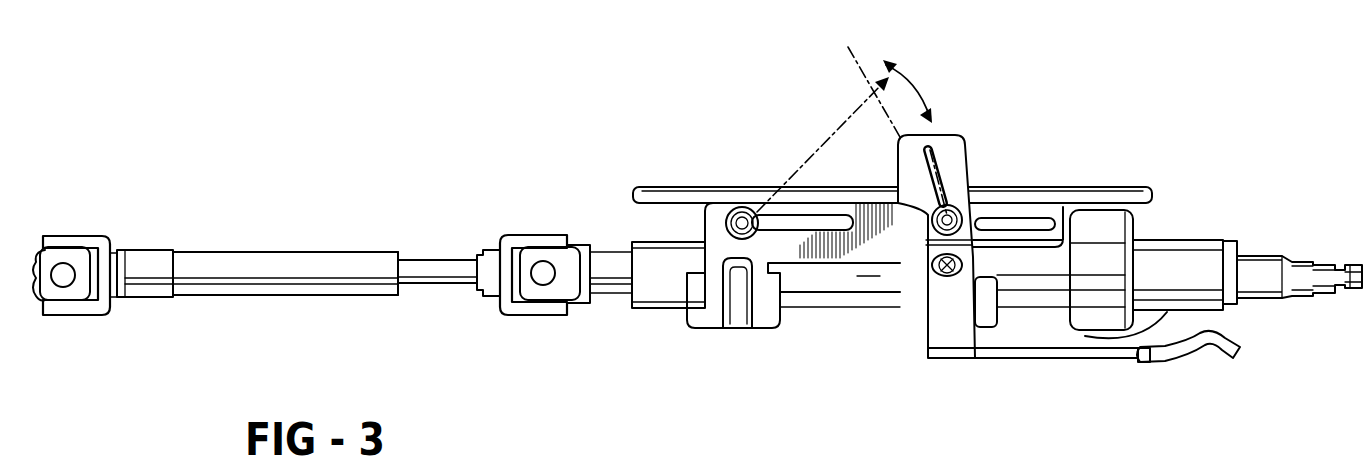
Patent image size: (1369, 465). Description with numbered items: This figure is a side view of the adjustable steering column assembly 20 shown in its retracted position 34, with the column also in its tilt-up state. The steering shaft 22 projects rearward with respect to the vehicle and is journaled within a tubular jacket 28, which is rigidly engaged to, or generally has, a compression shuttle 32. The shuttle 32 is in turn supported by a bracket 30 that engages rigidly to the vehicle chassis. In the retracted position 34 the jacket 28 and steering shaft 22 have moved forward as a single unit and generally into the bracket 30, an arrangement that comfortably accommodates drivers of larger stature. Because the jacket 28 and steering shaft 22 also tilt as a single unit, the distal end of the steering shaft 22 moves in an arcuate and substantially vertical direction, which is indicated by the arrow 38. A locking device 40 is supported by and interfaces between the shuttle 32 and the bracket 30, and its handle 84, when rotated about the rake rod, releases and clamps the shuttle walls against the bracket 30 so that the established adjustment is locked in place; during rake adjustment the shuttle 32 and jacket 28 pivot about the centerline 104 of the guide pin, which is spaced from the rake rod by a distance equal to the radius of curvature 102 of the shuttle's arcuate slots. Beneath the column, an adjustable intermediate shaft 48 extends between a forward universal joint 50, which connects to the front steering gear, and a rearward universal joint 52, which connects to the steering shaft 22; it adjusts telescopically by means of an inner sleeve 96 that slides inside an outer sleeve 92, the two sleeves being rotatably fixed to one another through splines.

The adjustable steering column assembly 20 is at (1131, 198).
The steering shaft 22 is at (1257, 248).
The jacket 28 is at (1188, 233).
The bracket 30 is at (1040, 183).
The shuttle 32 is at (852, 272).
The retracted position 34 is at (1178, 120).
The arrow 38 is at (913, 92).
The locking device 40 is at (948, 368).
The adjustable intermediate shaft 48 is at (357, 306).
The forward universal joint 50 is at (80, 237).
The rearward universal joint 52 is at (530, 318).
The handle 84 is at (1150, 364).
The outer sleeve 92 is at (292, 262).
The inner sleeve 96 is at (438, 268).
The radius of curvature 102 is at (820, 140).
The centerline 104 is at (742, 207).